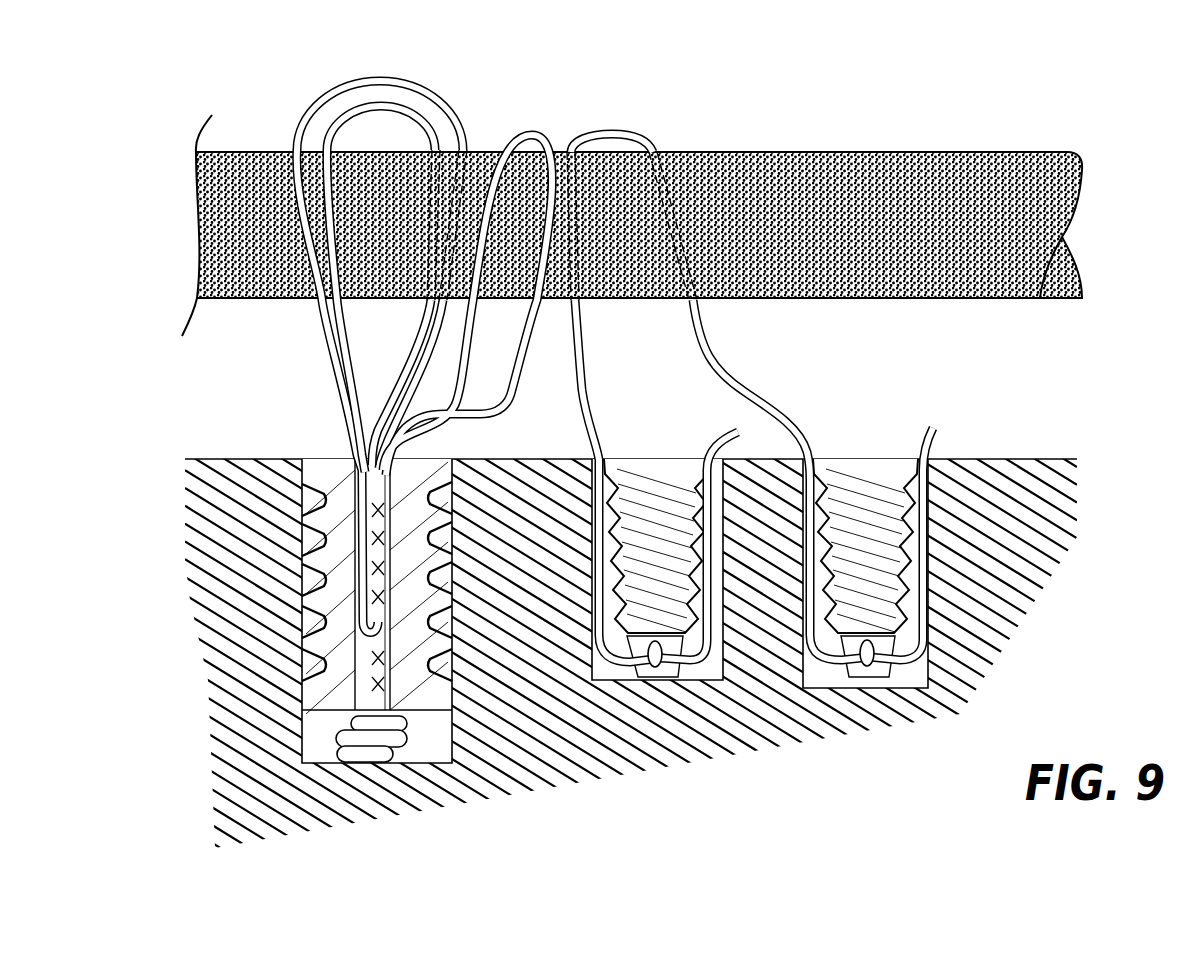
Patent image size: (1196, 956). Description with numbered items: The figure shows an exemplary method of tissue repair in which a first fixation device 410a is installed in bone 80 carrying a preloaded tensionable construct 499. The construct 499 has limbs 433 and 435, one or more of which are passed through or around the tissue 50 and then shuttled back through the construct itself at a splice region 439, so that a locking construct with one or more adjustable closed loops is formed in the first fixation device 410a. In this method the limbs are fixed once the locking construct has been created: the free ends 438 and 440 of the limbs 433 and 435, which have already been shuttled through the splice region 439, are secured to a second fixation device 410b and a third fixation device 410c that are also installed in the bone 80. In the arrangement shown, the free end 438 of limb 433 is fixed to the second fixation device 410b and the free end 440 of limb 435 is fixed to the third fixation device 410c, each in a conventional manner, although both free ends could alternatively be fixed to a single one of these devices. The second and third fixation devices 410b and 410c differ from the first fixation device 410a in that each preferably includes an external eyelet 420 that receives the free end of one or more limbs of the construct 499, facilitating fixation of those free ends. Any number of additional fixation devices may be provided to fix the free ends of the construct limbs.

The tissue 50 is at (771, 234).
The bone 80 is at (508, 650).
The first fixation device 410a is at (422, 720).
The second fixation device 410b is at (703, 660).
The third fixation device 410c is at (899, 662).
The external eyelet 420 is at (666, 668).
The limb 433 is at (422, 121).
The limb 435 is at (320, 320).
The free end 438 is at (585, 407).
The splice region 439 is at (392, 553).
The free end 440 is at (788, 416).
The tensionable construct 499 is at (356, 448).